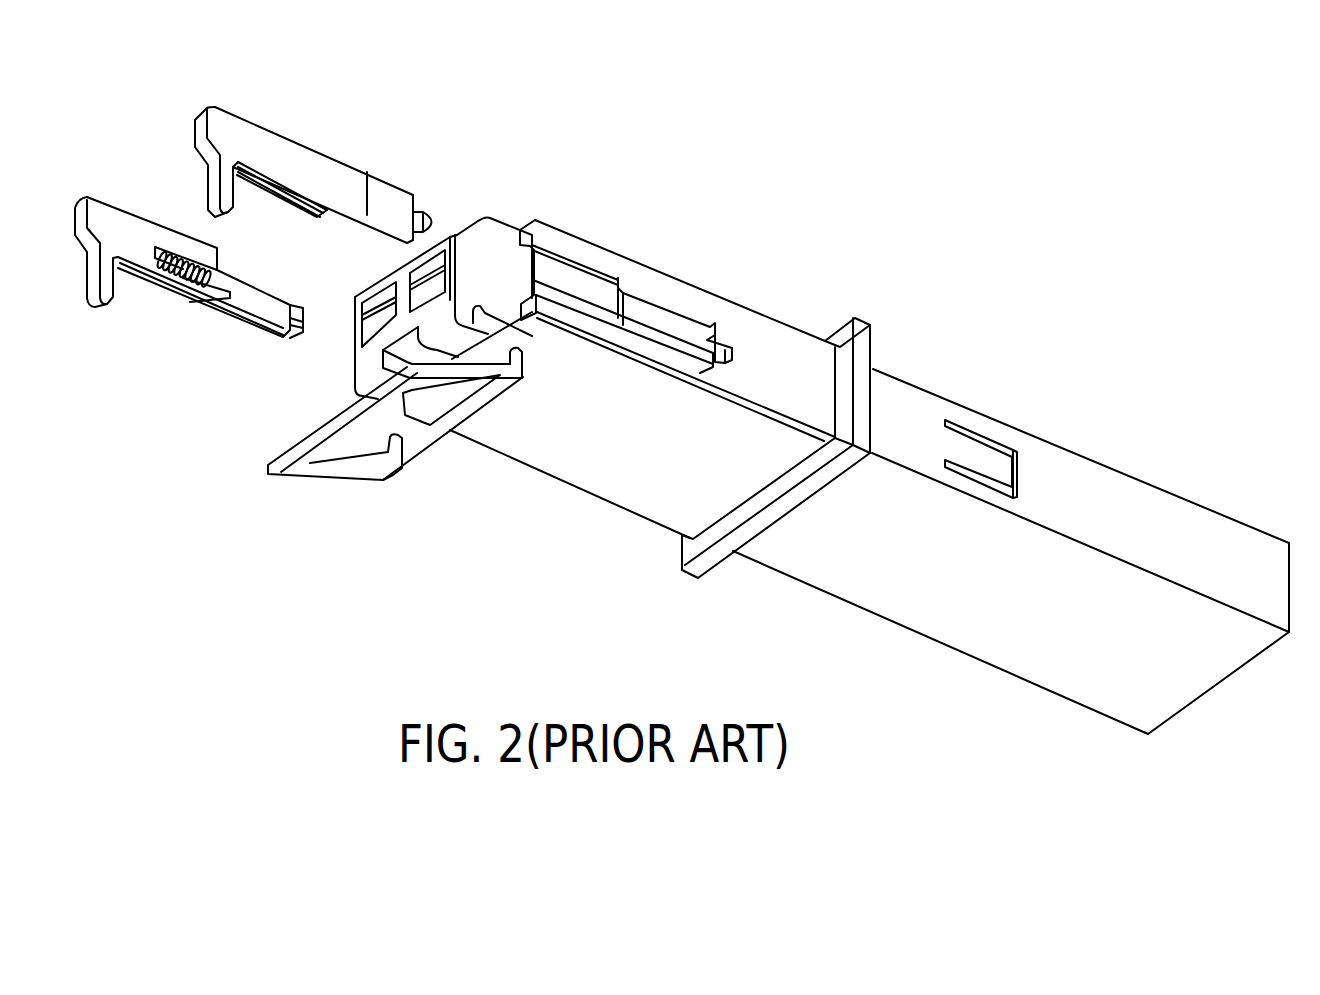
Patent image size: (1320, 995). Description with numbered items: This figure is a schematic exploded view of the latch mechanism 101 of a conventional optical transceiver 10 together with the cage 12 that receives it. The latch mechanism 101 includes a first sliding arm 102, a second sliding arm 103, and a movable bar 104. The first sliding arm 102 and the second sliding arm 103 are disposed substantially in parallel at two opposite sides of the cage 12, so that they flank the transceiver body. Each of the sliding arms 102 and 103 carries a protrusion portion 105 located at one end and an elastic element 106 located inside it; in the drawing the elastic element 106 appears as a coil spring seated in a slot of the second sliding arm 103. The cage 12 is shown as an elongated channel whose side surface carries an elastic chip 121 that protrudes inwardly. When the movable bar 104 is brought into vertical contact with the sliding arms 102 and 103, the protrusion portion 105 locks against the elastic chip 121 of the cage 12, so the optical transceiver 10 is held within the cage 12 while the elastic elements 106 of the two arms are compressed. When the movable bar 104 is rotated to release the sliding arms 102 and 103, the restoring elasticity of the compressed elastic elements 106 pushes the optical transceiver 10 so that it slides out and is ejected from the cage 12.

The optical transceiver 10 is at (635, 277).
The cage 12 is at (1118, 502).
The elastic chip 121 is at (967, 447).
The latch mechanism 101 is at (275, 391).
The first sliding arm 102 is at (305, 165).
The second sliding arm 103 is at (107, 225).
The movable bar 104 is at (320, 473).
The protrusion portion 105 is at (437, 220).
The elastic element 106 is at (195, 280).